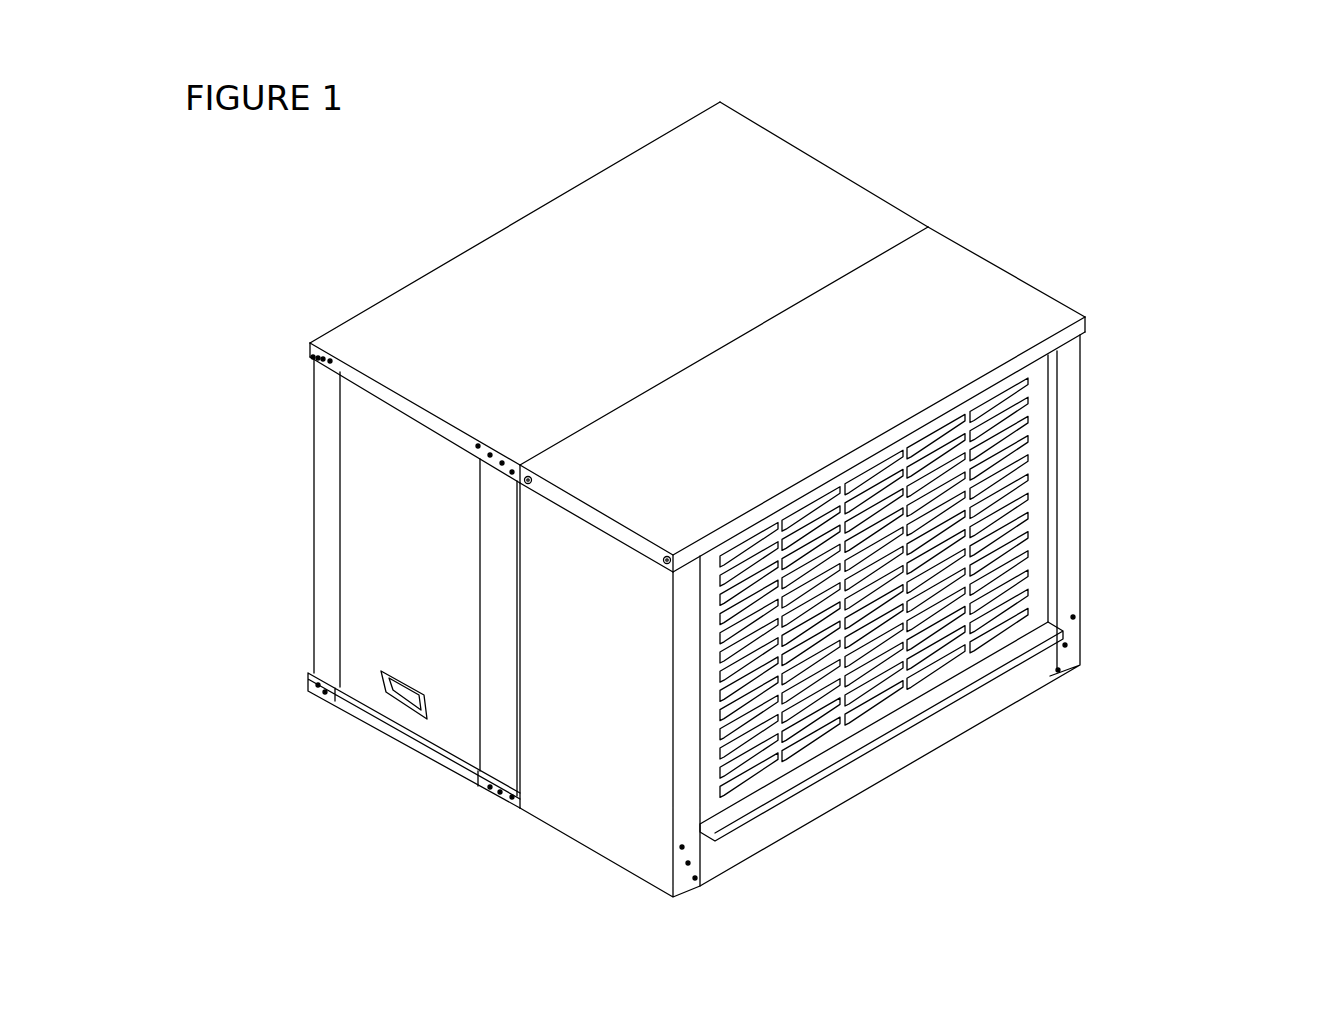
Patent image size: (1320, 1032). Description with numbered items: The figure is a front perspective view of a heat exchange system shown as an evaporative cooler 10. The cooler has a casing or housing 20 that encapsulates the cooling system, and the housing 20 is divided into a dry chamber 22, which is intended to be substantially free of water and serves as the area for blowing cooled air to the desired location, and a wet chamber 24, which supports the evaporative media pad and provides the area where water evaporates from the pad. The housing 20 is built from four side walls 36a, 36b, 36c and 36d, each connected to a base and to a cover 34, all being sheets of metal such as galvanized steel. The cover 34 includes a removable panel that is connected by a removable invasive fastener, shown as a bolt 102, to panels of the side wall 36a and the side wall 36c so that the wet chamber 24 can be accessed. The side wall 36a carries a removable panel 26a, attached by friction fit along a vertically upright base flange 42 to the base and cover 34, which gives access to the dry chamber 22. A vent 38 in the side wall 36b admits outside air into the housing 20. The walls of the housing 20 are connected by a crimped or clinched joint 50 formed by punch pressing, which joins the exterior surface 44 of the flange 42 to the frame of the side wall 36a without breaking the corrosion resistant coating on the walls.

The evaporative cooler 10 is at (1192, 83).
The housing 20 is at (1068, 118).
The dry chamber 22 is at (815, 137).
The wet chamber 24 is at (1012, 247).
The removable panel 26a is at (360, 535).
The cover 34 is at (517, 172).
The side wall 36a is at (322, 808).
The side wall 36b is at (1070, 557).
The side wall 36c is at (960, 205).
The side wall 36d is at (563, 130).
The vent 38 is at (1038, 443).
The base flange 42 is at (505, 339).
The exterior surface 44 is at (483, 790).
The clinched joint 50 is at (505, 446).
The bolt 102 is at (532, 480).